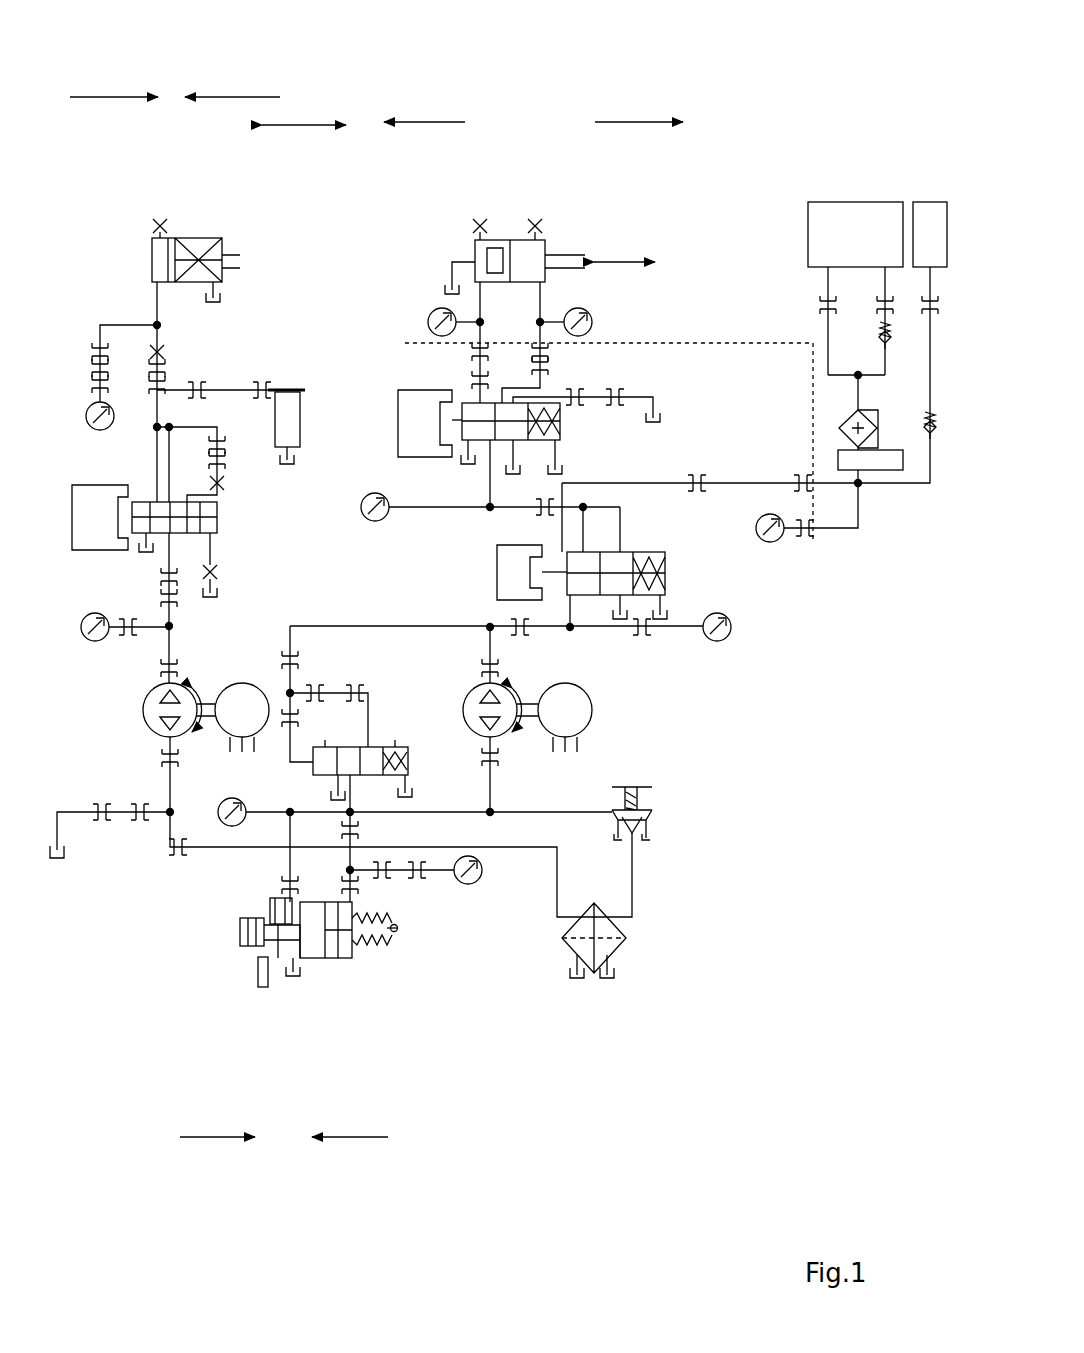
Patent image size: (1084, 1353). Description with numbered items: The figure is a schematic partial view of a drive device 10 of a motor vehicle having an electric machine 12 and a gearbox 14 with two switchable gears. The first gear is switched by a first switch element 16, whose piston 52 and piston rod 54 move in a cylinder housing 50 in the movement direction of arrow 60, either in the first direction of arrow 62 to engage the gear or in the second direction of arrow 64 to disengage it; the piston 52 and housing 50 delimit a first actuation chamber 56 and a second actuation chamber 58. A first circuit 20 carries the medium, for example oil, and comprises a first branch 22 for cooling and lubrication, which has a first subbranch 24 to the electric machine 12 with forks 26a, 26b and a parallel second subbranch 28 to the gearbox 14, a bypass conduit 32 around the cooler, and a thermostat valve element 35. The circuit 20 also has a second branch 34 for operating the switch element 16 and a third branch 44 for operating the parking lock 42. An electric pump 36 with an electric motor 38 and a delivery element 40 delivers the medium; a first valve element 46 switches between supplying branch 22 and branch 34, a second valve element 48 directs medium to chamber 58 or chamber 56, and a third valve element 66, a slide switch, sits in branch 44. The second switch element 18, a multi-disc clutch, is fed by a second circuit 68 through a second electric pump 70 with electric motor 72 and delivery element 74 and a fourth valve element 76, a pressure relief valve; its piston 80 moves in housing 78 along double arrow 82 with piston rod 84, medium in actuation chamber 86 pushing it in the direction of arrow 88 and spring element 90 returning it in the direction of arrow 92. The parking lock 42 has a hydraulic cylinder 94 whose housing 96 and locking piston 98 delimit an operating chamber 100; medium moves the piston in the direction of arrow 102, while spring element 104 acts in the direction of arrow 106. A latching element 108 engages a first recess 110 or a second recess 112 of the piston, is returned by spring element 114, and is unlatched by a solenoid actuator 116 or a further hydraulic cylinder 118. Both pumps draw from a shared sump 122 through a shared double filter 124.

The drive device 10 is at (152, 192).
The electric machine 12 is at (856, 202).
The gearbox 14 is at (930, 202).
The first switch element 16 is at (520, 224).
The second switch element 18 is at (189, 239).
The first circuit 20 is at (468, 230).
The first branch 22 is at (828, 540).
The first subbranch 24 is at (880, 495).
The fork 26a is at (832, 334).
The fork 26b is at (885, 290).
The second subbranch 28 is at (920, 495).
The bypass conduit 32 is at (856, 412).
The second branch 34 is at (650, 642).
The valve element 35 is at (838, 460).
The electric pump 36 is at (598, 745).
The electric motor 38 is at (592, 712).
The delivery element 40 is at (465, 695).
The parking lock 42 is at (278, 985).
The third branch 44 is at (322, 620).
The first valve element 46 is at (672, 578).
The second valve element 48 is at (395, 385).
The housing 50 is at (545, 228).
The piston 52 is at (490, 228).
The piston rod 54 is at (575, 250).
The first actuation chamber 56 is at (520, 282).
The second actuation chamber 58 is at (478, 250).
The arrow 60 is at (622, 262).
The arrow 62 is at (630, 122).
The arrow 64 is at (405, 122).
The third valve element 66 is at (405, 790).
The second circuit 68 is at (150, 878).
The second electric pump 70 is at (124, 712).
The second electric motor 72 is at (243, 683).
The second delivery element 74 is at (148, 700).
The fourth valve element 76 is at (88, 478).
The housing 78 is at (200, 240).
The piston 80 is at (162, 262).
The double arrow 82 is at (305, 125).
The piston rod 84 is at (225, 262).
The actuation chamber 86 is at (153, 245).
The arrow 88 is at (100, 97).
The spring element 90 is at (190, 283).
The arrow 92 is at (220, 97).
The hydraulic cylinder 94 is at (294, 980).
The housing 96 is at (310, 965).
The piston 98 is at (355, 965).
The operating chamber 100 is at (365, 912).
The arrow 102 is at (362, 1137).
The mechanical spring element 104 is at (375, 945).
The arrow 106 is at (222, 1137).
The latching element 108 is at (240, 928).
The first recess 110 is at (255, 958).
The second recess 112 is at (308, 912).
The mechanical spring element 114 is at (245, 948).
The actuator 116 is at (262, 1000).
The further hydraulic cylinder 118 is at (272, 910).
The sump 122 is at (607, 978).
The filter 124 is at (612, 945).